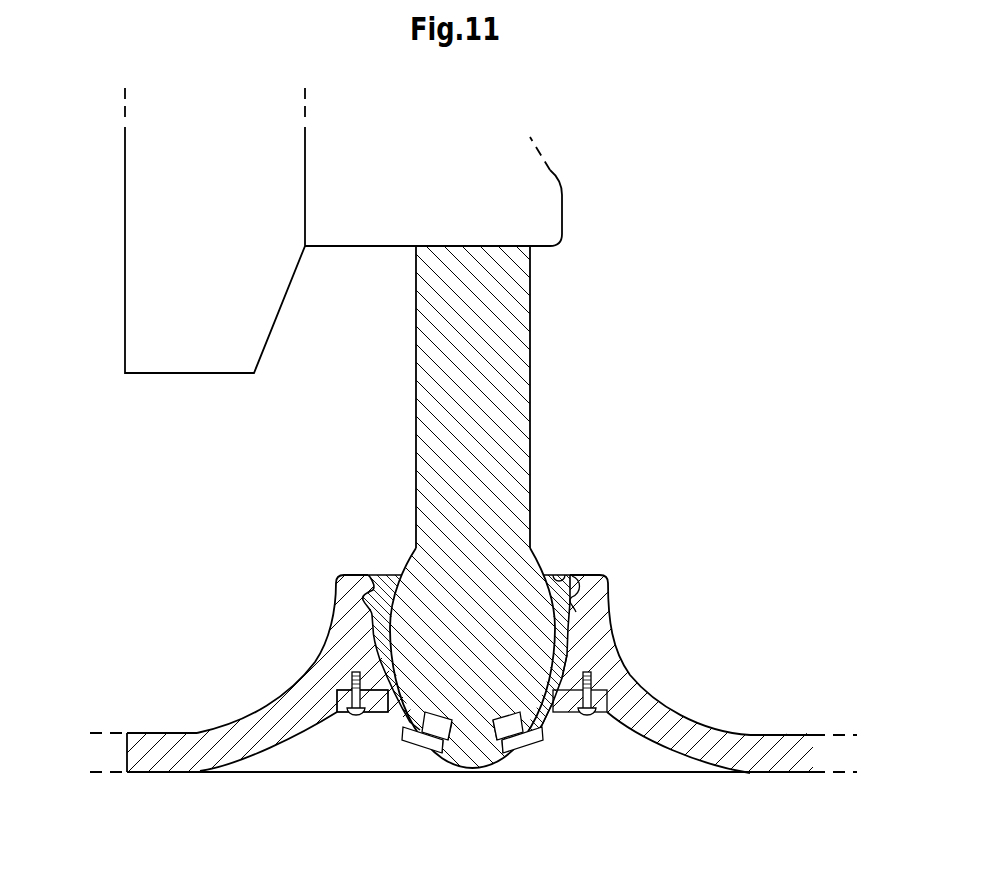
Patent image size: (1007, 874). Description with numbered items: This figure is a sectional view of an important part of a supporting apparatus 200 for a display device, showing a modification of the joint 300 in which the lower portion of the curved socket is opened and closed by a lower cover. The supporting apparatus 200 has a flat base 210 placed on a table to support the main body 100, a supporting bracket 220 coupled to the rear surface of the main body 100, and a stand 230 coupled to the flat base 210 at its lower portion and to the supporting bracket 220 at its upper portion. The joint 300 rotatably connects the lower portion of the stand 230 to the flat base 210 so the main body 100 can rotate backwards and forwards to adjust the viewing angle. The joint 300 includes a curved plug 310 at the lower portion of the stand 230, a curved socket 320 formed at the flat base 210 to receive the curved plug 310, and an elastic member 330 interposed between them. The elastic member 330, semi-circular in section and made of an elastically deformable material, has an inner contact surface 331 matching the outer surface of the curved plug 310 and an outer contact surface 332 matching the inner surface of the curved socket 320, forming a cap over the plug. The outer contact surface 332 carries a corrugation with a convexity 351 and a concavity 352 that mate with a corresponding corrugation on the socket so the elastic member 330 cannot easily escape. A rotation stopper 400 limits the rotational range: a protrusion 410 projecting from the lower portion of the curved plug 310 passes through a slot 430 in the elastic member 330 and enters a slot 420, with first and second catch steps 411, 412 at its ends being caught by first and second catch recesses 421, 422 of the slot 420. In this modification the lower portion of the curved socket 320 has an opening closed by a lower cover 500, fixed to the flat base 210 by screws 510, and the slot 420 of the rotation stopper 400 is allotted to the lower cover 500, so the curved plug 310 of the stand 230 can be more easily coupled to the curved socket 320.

The main body 100 is at (156, 262).
The supporting apparatus 200 is at (788, 725).
The flat base 210 is at (150, 733).
The supporting bracket 220 is at (543, 215).
The stand 230 is at (507, 326).
The joint 300 is at (470, 640).
The curved plug 310 is at (603, 617).
The curved socket 320 is at (372, 620).
The elastic member 330 is at (560, 645).
The inner contact surface 331 is at (577, 730).
The outer contact surface 332 is at (560, 662).
The convexity 351 is at (610, 589).
The concavity 352 is at (565, 575).
The rotation stopper 400 is at (460, 772).
The protrusion 410 is at (470, 740).
The first catch step 411 is at (437, 753).
The second catch step 412 is at (500, 720).
The slot 420 is at (400, 779).
The first catch recess 421 is at (410, 732).
The second catch recess 422 is at (510, 727).
The slot 430 is at (539, 784).
The lower cover 500 is at (352, 722).
The screws 510 is at (350, 718).